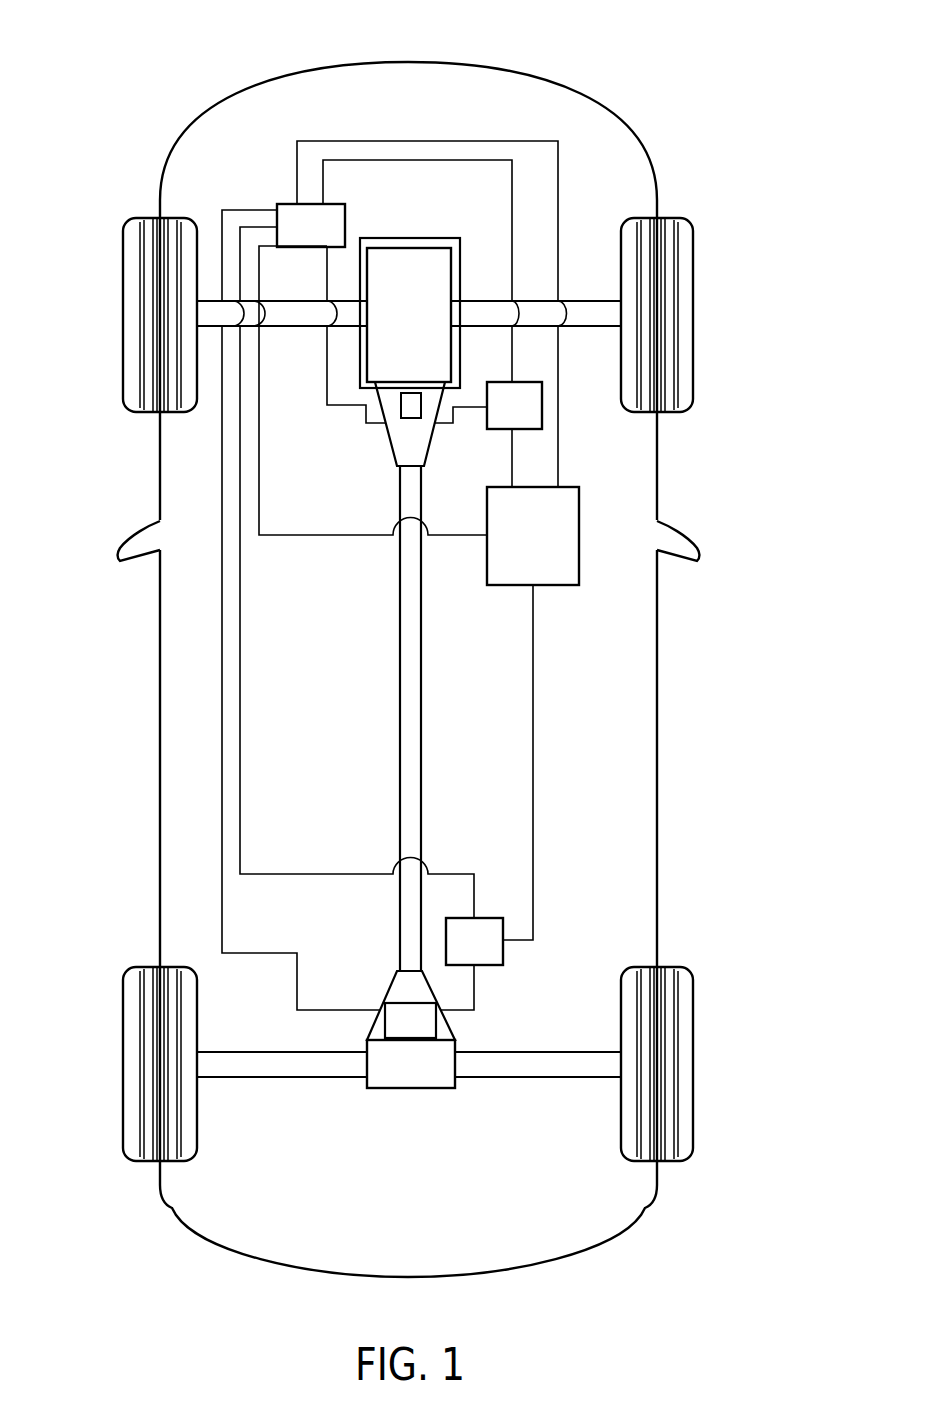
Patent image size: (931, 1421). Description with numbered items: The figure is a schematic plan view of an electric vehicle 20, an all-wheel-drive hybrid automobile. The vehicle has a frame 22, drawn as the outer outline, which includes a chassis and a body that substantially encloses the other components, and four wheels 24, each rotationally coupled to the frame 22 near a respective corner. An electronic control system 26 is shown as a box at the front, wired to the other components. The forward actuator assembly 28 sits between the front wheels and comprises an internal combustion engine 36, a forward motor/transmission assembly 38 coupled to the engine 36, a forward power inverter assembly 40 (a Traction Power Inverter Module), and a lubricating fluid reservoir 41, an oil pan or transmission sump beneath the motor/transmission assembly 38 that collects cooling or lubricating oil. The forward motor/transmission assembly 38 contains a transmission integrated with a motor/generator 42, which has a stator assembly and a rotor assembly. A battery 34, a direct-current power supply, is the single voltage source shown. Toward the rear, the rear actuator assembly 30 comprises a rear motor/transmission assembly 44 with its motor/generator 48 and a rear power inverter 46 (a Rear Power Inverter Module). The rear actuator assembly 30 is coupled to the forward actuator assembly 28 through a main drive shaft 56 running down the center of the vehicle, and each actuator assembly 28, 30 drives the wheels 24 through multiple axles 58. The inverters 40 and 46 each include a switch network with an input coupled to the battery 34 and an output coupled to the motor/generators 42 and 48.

The electric vehicle 20 is at (652, 85).
The frame 22 is at (418, 62).
The wheels 24 is at (122, 313).
The electronic control system 26 is at (311, 225).
The forward actuator assembly 28 is at (463, 292).
The rear actuator assembly 30 is at (470, 1037).
The battery 34 is at (533, 536).
The internal combustion engine 36 is at (409, 315).
The forward motor/transmission assembly 38 is at (437, 432).
The forward power inverter assembly 40 is at (514, 405).
The lubricating fluid reservoir 41 is at (426, 238).
The motor/generator 42 is at (400, 410).
The rear motor/transmission assembly 44 is at (388, 989).
The rear power inverter 46 is at (474, 941).
The motor/generator 48 is at (410, 1020).
The main shaft 56 is at (422, 711).
The axles 58 is at (586, 301).